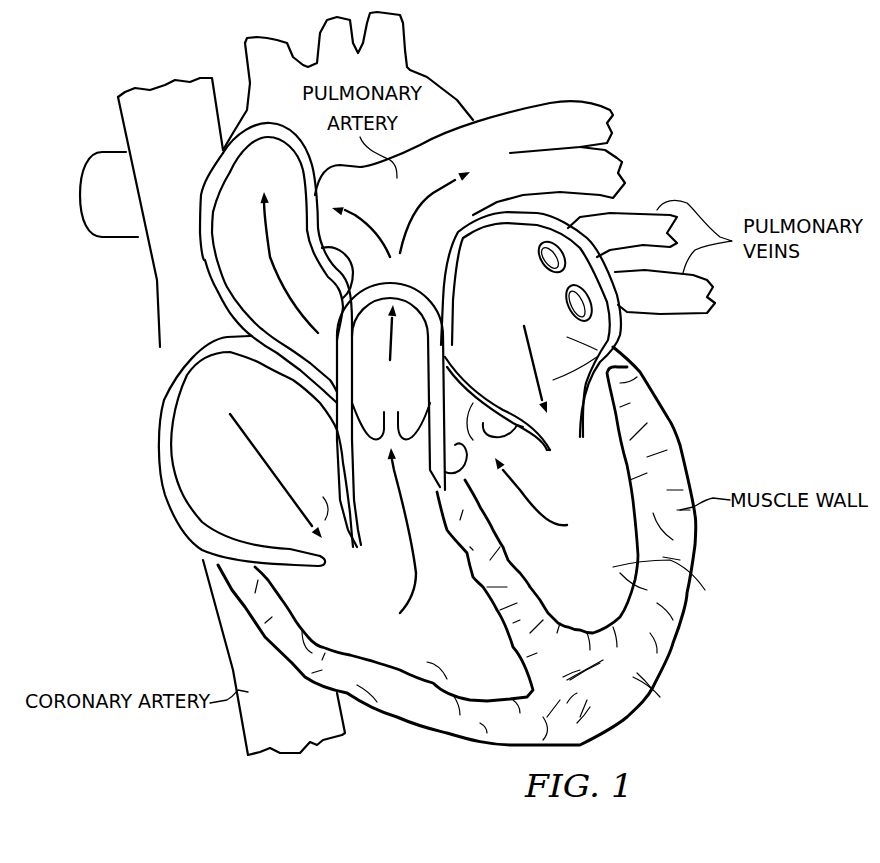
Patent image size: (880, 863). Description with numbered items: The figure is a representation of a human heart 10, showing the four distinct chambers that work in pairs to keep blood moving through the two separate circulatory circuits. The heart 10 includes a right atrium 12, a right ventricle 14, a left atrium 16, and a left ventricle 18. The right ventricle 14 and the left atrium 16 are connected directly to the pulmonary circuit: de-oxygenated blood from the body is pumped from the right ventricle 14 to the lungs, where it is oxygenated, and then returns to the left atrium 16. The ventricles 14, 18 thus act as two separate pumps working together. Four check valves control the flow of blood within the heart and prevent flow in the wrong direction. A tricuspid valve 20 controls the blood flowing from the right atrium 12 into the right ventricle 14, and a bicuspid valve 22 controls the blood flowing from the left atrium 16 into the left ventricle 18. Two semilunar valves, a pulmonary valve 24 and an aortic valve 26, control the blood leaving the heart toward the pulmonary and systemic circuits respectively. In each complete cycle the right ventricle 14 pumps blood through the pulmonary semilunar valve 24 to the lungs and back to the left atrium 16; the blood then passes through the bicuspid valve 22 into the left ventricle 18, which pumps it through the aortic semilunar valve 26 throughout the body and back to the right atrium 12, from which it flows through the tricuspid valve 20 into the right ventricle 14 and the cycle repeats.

The heart 10 is at (660, 97).
The right atrium 12 is at (188, 497).
The right ventricle 14 is at (450, 663).
The left atrium 16 is at (603, 357).
The left ventricle 18 is at (688, 588).
The tricuspid valve 20 is at (327, 550).
The bicuspid valve 22 is at (562, 433).
The pulmonary semilunar valve 24 is at (388, 413).
The aortic semilunar valve 26 is at (478, 403).